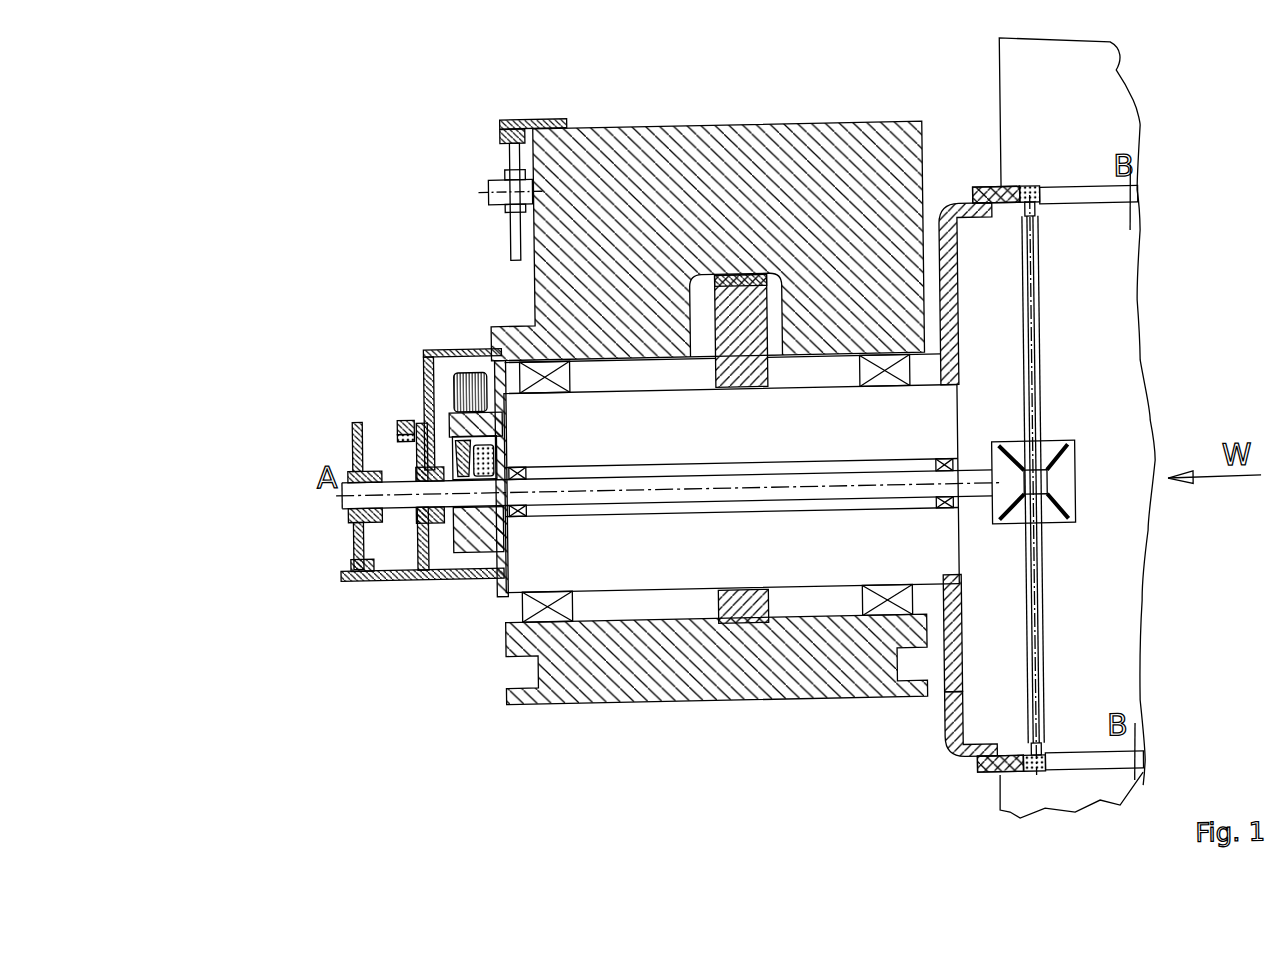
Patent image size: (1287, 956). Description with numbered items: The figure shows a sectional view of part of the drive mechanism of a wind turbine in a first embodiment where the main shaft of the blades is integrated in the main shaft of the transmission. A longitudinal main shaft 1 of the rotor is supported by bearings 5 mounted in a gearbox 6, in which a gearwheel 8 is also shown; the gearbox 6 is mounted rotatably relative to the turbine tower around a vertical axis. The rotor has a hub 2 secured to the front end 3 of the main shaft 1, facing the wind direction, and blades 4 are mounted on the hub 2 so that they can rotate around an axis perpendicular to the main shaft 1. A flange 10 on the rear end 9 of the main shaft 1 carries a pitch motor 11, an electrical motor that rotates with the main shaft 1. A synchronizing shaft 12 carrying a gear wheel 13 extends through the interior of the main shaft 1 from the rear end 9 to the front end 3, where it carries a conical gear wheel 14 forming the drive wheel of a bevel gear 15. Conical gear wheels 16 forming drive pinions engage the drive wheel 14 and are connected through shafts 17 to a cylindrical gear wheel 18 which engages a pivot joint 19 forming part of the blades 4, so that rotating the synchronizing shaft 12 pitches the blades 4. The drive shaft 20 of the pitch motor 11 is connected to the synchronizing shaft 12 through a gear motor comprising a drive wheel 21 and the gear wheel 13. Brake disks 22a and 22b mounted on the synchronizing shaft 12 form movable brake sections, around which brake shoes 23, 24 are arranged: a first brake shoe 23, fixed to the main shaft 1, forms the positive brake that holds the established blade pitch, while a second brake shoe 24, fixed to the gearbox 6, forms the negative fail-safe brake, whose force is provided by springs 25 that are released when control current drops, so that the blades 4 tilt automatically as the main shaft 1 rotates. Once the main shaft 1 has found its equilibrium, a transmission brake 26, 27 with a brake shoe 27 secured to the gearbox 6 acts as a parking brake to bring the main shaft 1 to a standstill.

The main shaft 1 is at (668, 570).
The hub 2 is at (944, 728).
The front end 3 is at (945, 565).
The blades 4 is at (1017, 105).
The bearings 5 is at (544, 618).
The gearbox 6 is at (585, 674).
The gearwheel 8 is at (735, 614).
The rear end 9 is at (518, 566).
The flange 10 is at (476, 554).
The pitch motor 11 is at (465, 378).
The synchronizing shaft 12 is at (829, 498).
The gear wheel 13 is at (438, 573).
The conical gear wheel 14 is at (1031, 498).
The bevel gear 15 is at (1086, 456).
The conical gear wheels 16 is at (1062, 449).
The shafts 17 is at (1041, 332).
The cylindrical gear wheel 18 is at (1033, 195).
The pivot joint 19 is at (1003, 194).
The drive shaft 20 is at (430, 370).
The drive wheel 21 is at (452, 426).
The brake disk 22a is at (365, 567).
The brake disk 22b is at (353, 541).
The first brake shoe 23 is at (348, 561).
The second brake shoe 24 is at (398, 417).
The springs 25 is at (398, 429).
The transmission brake 26 is at (513, 156).
The brake shoe 27 is at (505, 123).